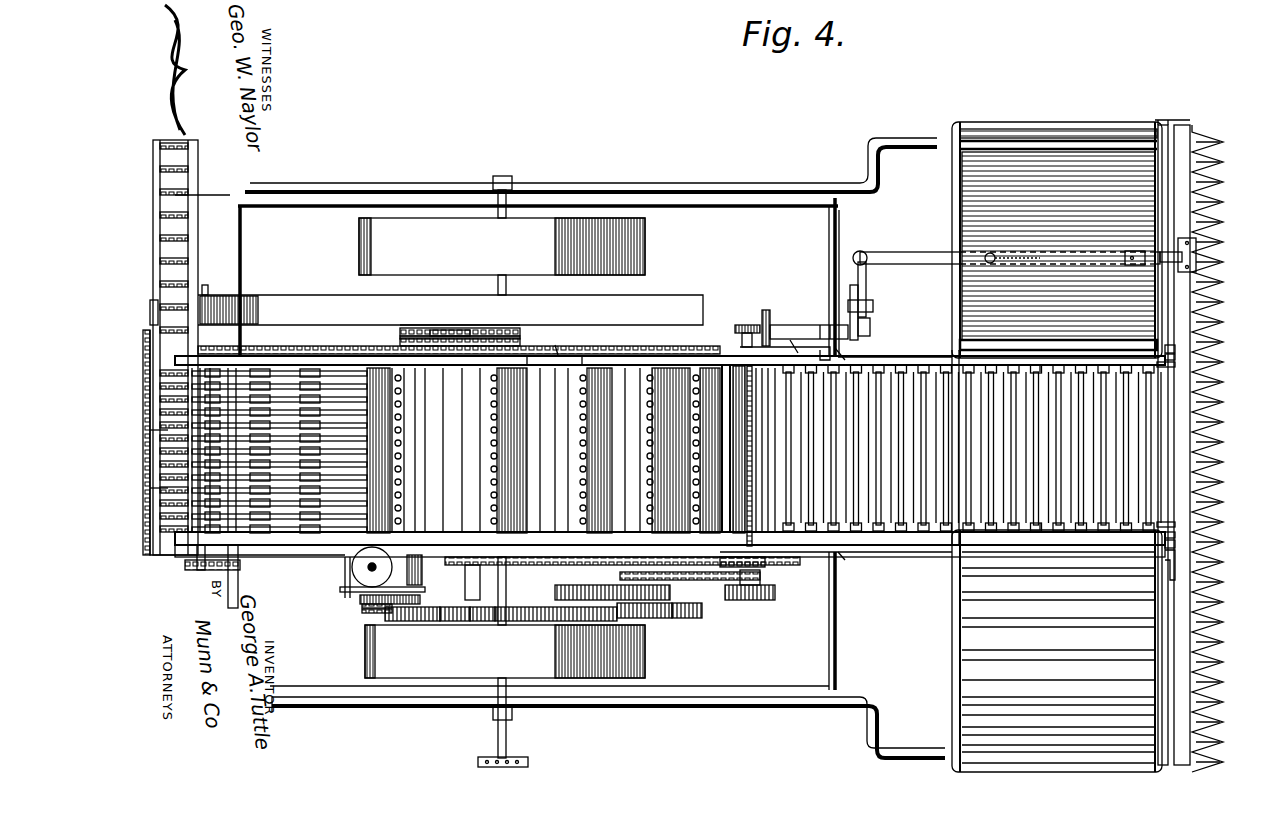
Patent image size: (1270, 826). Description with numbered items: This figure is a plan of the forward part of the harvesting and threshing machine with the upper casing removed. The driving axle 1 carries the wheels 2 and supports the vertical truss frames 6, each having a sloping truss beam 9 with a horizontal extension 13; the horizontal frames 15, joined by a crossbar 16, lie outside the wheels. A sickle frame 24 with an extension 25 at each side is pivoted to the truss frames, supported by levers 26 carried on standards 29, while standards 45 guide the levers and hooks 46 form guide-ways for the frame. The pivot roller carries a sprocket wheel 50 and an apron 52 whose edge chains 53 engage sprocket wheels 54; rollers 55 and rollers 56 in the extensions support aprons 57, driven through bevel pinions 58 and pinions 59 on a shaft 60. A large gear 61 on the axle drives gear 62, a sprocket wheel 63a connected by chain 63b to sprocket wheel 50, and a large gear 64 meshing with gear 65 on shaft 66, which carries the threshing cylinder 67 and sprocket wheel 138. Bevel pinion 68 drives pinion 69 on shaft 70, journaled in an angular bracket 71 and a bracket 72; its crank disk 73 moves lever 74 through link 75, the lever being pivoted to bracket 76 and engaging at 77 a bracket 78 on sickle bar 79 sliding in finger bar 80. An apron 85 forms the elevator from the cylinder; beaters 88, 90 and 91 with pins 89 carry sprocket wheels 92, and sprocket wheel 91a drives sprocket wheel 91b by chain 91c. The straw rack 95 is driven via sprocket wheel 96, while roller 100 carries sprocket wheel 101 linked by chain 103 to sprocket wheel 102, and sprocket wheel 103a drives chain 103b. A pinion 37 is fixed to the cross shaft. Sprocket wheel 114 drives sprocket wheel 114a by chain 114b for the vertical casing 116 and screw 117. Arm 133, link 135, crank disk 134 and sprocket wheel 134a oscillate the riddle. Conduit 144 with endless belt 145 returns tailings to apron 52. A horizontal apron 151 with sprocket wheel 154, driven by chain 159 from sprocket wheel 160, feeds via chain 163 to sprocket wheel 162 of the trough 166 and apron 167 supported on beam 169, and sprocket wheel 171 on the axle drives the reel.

The driving axle 1 is at (505, 621).
The wheels 2 is at (502, 448).
The vertical truss frames 6 is at (445, 368).
The truss beam 9 is at (540, 582).
The horizontal extension 13 is at (318, 338).
The horizontal frames 15 is at (839, 238).
The crossbar 16 is at (236, 210).
The sickle frame 24 is at (910, 355).
The extension 25 is at (1067, 122).
The levers 26 is at (700, 190).
The standards 29 is at (508, 196).
The pinion 37 is at (480, 588).
The standards 45 is at (838, 203).
The hooks 46 is at (840, 556).
The sprocket wheel 50 is at (215, 462).
The apron 52 is at (972, 448).
The chains 53 is at (1025, 358).
The sprocket wheels 54 is at (1175, 365).
The rollers 55 is at (1120, 141).
The rollers 56 is at (1105, 340).
The aprons 57 is at (998, 128).
The bevel pinions 58 is at (1175, 349).
The pinions 59 is at (1175, 357).
The shaft 60 is at (1175, 570).
The large gear 61 is at (596, 651).
The gear 62 is at (670, 592).
The sprocket wheel 63a is at (617, 575).
The chain 63b is at (670, 612).
The large gear 64 is at (700, 615).
The gear 65 is at (760, 600).
The shaft 66 is at (760, 578).
The threshing cylinder 67 is at (748, 437).
The bevel pinion 68 is at (742, 322).
The pinion 69 is at (768, 310).
The shaft 70 is at (790, 325).
The angular bracket 71 is at (790, 350).
The bracket 72 is at (851, 300).
The crank disk 73 is at (870, 306).
The lever 74 is at (912, 252).
The link 75 is at (866, 283).
The bracket 76 is at (990, 253).
The pivotal engagement 77 is at (1182, 258).
The bracket 78 is at (1196, 250).
The sickle bar 79 is at (1225, 410).
The finger bar 80 is at (1222, 437).
The apron 85 is at (554, 450).
The beater 88 is at (648, 450).
The pins 89 is at (629, 450).
The beater 90 is at (596, 450).
The beater 91 is at (509, 450).
The sprocket wheel 91a is at (530, 355).
The sprocket wheel 91b is at (431, 450).
The chain 91c is at (464, 450).
The sprocket wheels 92 is at (690, 545).
The straw rack 95 is at (279, 450).
The sprocket wheel 96 is at (375, 440).
The roller 100 is at (408, 440).
The sprocket wheel 101 is at (424, 312).
The sprocket wheel 102 is at (518, 328).
The chain 103 is at (455, 330).
The sprocket wheel 103a is at (385, 328).
The chain 103b is at (285, 340).
The sprocket wheel 114 is at (395, 621).
The sprocket wheel 114a is at (362, 606).
The chain 114b is at (370, 613).
The vertical casing 116 is at (395, 568).
The screw 117 is at (372, 547).
The arm 133 is at (340, 590).
The crank disk 134 is at (445, 621).
The sprocket wheel 134a is at (465, 622).
The link 135 is at (360, 600).
The sprocket wheel 138 is at (765, 562).
The conduit 144 is at (598, 283).
The endless belt 145 is at (235, 296).
The horizontal apron 151 is at (172, 488).
The sprocket wheel 154 is at (147, 555).
The chain 159 is at (240, 565).
The sprocket wheel 160 is at (201, 570).
The sprocket wheel 162 is at (182, 312).
The chain 163 is at (172, 430).
The trough 166 is at (206, 194).
The apron 167 is at (175, 160).
The beam 169 is at (205, 285).
The sprocket wheel 171 is at (528, 760).